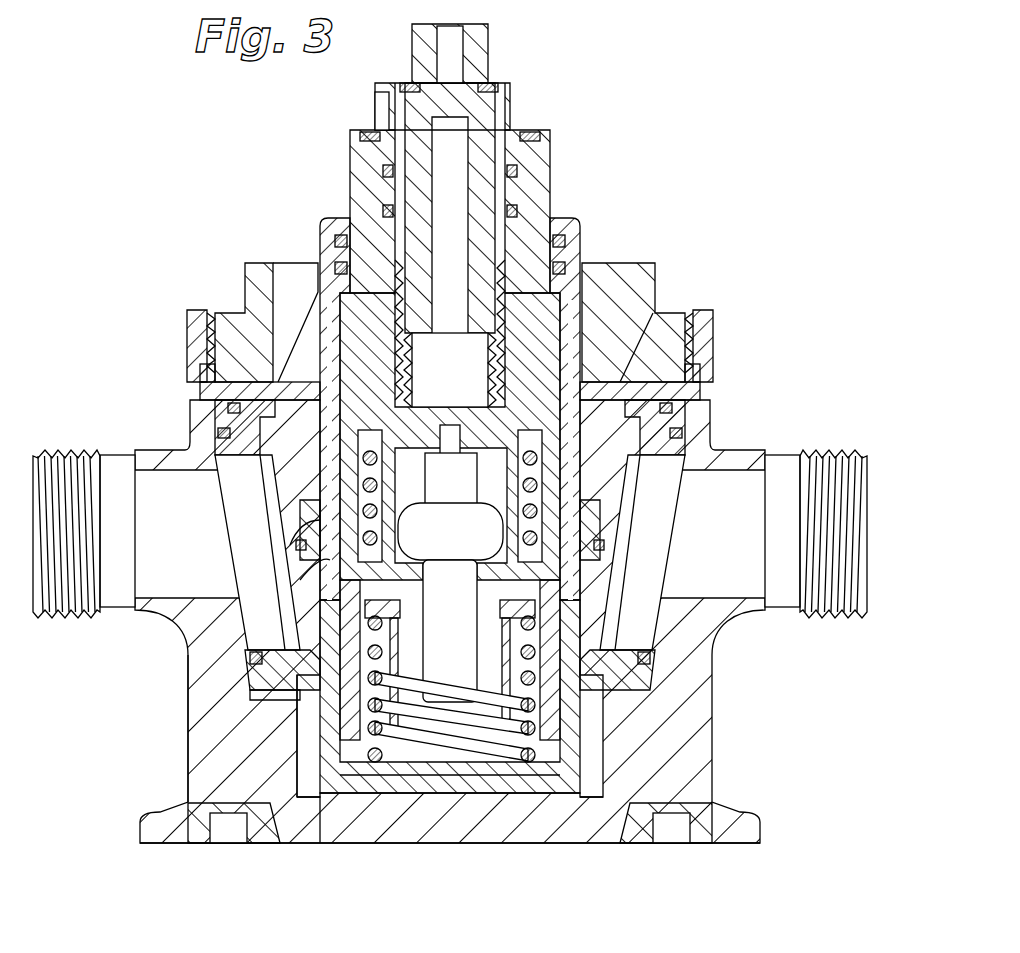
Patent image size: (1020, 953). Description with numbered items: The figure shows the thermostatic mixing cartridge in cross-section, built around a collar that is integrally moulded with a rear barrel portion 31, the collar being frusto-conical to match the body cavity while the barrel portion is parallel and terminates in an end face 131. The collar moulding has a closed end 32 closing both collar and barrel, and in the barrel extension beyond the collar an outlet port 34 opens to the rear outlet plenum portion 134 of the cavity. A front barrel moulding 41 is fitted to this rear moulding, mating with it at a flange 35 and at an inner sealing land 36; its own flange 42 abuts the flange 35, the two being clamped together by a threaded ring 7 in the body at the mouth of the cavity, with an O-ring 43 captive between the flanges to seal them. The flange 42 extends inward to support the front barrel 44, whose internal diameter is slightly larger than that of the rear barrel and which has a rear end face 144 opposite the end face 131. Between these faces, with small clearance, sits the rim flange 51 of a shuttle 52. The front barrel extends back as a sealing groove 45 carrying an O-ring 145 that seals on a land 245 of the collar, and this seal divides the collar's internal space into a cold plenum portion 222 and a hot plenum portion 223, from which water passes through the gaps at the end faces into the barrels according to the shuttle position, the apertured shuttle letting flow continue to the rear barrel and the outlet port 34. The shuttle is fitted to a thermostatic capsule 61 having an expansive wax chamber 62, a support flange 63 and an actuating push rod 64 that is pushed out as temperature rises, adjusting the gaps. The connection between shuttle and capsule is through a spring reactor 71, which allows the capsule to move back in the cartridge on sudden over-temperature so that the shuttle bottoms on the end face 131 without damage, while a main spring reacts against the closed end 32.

The threaded ring 7 is at (228, 330).
The front barrel moulding 41 is at (580, 247).
The flange 42 is at (662, 372).
The O-ring 43 is at (205, 398).
The flange 35 is at (205, 413).
The inner sealing land 36 is at (220, 447).
The front barrel 44 is at (690, 452).
The actuating push rod 64 is at (450, 425).
The cold plenum portion 222 is at (265, 492).
The spring reactor 71 is at (600, 478).
The sealing groove 45 is at (300, 530).
The rear end face 144 is at (607, 505).
The land 245 is at (292, 548).
The thermostatic capsule 61 is at (450, 492).
The O-ring 145 is at (320, 557).
The hot plenum portion 223 is at (612, 568).
The support flange 63 is at (452, 580).
The rim flange 51 is at (300, 612).
The expansive wax chamber 62 is at (450, 671).
The end face 131 is at (640, 655).
The rear barrel portion 31 is at (620, 680).
The shuttle 52 is at (300, 655).
The outlet port 34 is at (320, 735).
The closed end 32 is at (360, 790).
The rear outlet plenum portion 134 is at (598, 790).